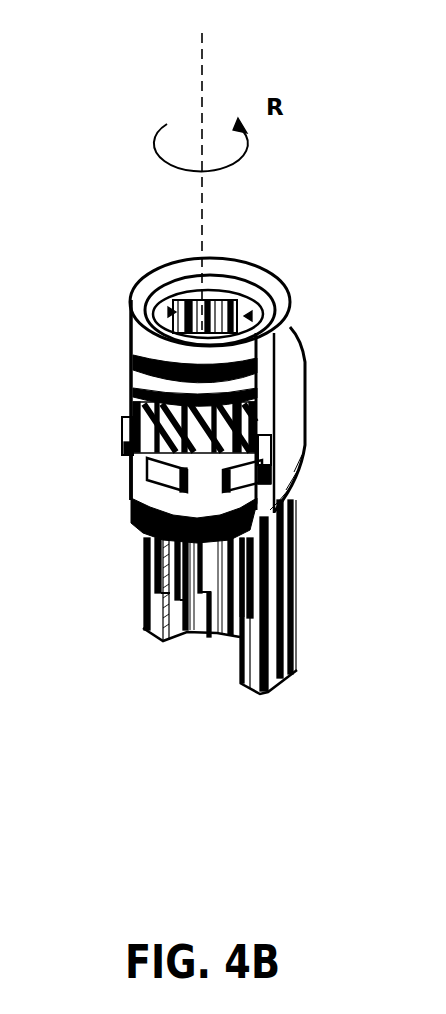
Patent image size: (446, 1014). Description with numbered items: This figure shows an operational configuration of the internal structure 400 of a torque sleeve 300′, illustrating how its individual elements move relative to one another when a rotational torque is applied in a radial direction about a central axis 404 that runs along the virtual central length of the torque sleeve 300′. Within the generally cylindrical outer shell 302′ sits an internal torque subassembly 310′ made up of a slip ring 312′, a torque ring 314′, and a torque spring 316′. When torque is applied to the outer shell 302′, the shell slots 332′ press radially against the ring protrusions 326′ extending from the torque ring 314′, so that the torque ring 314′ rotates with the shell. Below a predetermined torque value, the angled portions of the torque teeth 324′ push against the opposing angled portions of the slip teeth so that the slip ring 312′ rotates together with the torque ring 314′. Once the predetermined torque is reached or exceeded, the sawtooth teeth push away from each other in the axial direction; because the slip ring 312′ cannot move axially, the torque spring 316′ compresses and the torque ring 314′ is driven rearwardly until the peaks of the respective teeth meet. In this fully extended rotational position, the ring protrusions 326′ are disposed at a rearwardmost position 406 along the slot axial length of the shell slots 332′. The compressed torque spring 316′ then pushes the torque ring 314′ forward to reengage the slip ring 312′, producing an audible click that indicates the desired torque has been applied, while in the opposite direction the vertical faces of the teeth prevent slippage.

The internal structure 400 is at (121, 191).
The central axis 404 is at (202, 60).
The torque sleeve 300′ is at (312, 307).
The internal torque subassembly 310′ is at (104, 303).
The slip ring 312′ is at (118, 361).
The outer shell 302′ is at (300, 365).
The torque teeth 324′ is at (143, 433).
The shell slots 332′ is at (277, 446).
The torque ring 314′ is at (118, 472).
The rearwardmost position 406 is at (267, 474).
The ring protrusions 326′ is at (167, 477).
The torque spring 316′ is at (138, 519).